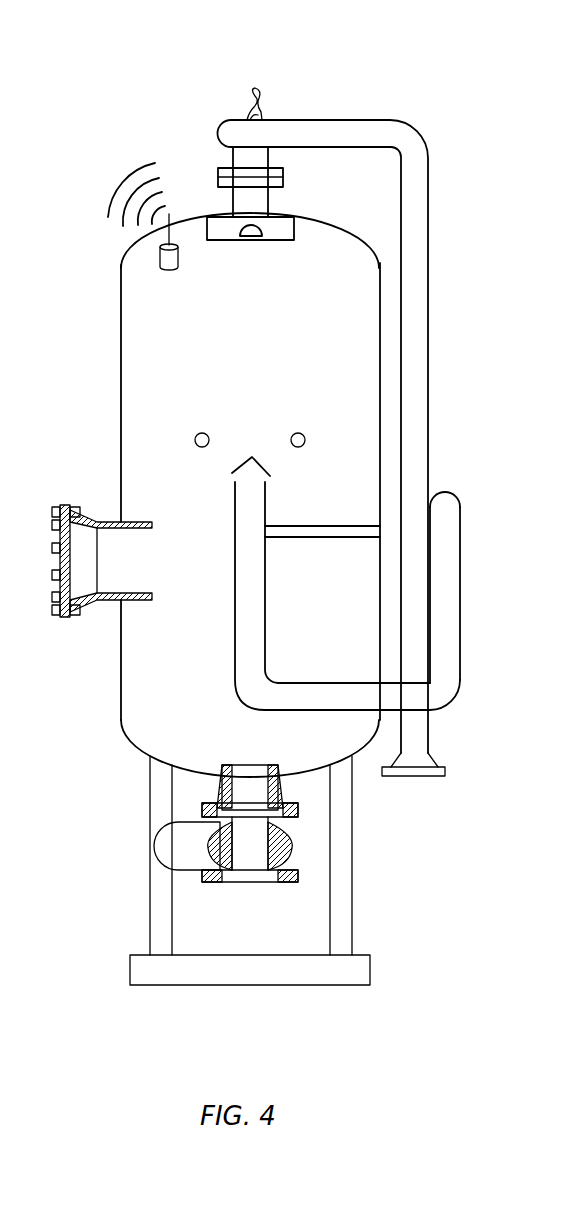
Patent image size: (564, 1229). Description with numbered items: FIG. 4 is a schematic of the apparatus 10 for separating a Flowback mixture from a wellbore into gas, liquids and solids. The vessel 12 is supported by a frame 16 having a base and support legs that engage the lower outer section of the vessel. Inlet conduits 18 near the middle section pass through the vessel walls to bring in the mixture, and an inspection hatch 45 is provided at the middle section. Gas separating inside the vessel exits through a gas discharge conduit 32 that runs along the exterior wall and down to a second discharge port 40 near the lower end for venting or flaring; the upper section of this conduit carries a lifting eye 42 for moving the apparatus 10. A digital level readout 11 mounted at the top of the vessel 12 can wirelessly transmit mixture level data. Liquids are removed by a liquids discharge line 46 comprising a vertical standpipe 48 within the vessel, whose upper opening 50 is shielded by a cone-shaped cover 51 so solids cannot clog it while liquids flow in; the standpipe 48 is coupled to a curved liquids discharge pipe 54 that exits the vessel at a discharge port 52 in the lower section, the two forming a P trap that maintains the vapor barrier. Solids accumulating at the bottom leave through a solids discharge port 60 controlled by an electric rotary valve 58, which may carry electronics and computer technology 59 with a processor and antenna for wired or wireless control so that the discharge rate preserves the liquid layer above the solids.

The apparatus 10 is at (150, 57).
The digital level readout 11 is at (160, 265).
The vessel 12 is at (119, 367).
The frame 16 is at (345, 935).
The inlet conduit 18 is at (200, 432).
The gas discharge conduit 32 is at (417, 216).
The second discharge port 40 is at (425, 778).
The lifting eye 42 is at (262, 108).
The inspection hatch 45 is at (58, 561).
The liquids discharge line 46 is at (357, 682).
The vertical standpipe 48 is at (235, 610).
The opening 50 is at (230, 488).
The cone-shaped cover 51 is at (270, 464).
The discharge port 52 is at (382, 698).
The liquids discharge pipe 54 is at (443, 572).
The electric rotary valve 58 is at (243, 882).
The electronics and computer technology 59 is at (262, 790).
The solids discharge port 60 is at (222, 790).